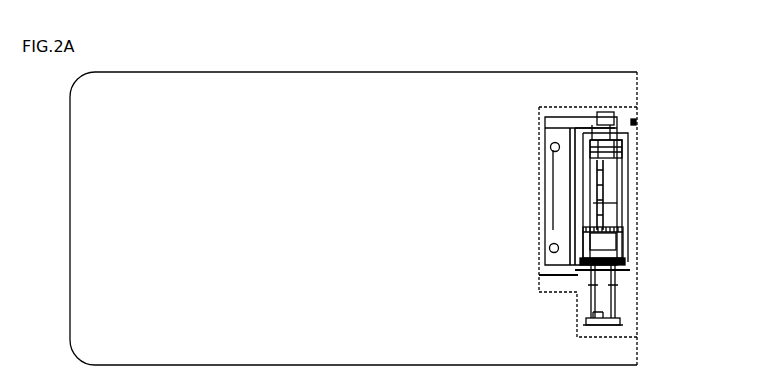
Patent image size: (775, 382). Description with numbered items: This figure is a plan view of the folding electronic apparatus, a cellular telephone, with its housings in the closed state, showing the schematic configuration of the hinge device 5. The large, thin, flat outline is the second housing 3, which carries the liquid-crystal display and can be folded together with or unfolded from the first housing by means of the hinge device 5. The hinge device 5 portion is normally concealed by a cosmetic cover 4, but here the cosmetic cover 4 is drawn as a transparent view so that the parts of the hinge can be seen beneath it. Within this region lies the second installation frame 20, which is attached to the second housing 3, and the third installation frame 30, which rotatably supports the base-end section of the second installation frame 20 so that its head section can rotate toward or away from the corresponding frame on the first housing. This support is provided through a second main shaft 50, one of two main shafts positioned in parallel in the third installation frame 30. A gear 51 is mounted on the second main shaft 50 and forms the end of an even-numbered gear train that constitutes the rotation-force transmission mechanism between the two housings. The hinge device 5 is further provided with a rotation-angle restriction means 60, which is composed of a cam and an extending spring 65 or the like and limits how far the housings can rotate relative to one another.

The second housing 3 is at (298, 86).
The cosmetic cover 4 is at (617, 143).
The hinge device 5 is at (638, 122).
The second installation frame 20 is at (560, 186).
The third installation frame 30 is at (604, 214).
The gear 51 is at (620, 240).
The rotation-angle restriction means 60 is at (602, 300).
The second main shaft 50 is at (617, 312).
The extending spring 65 is at (616, 320).